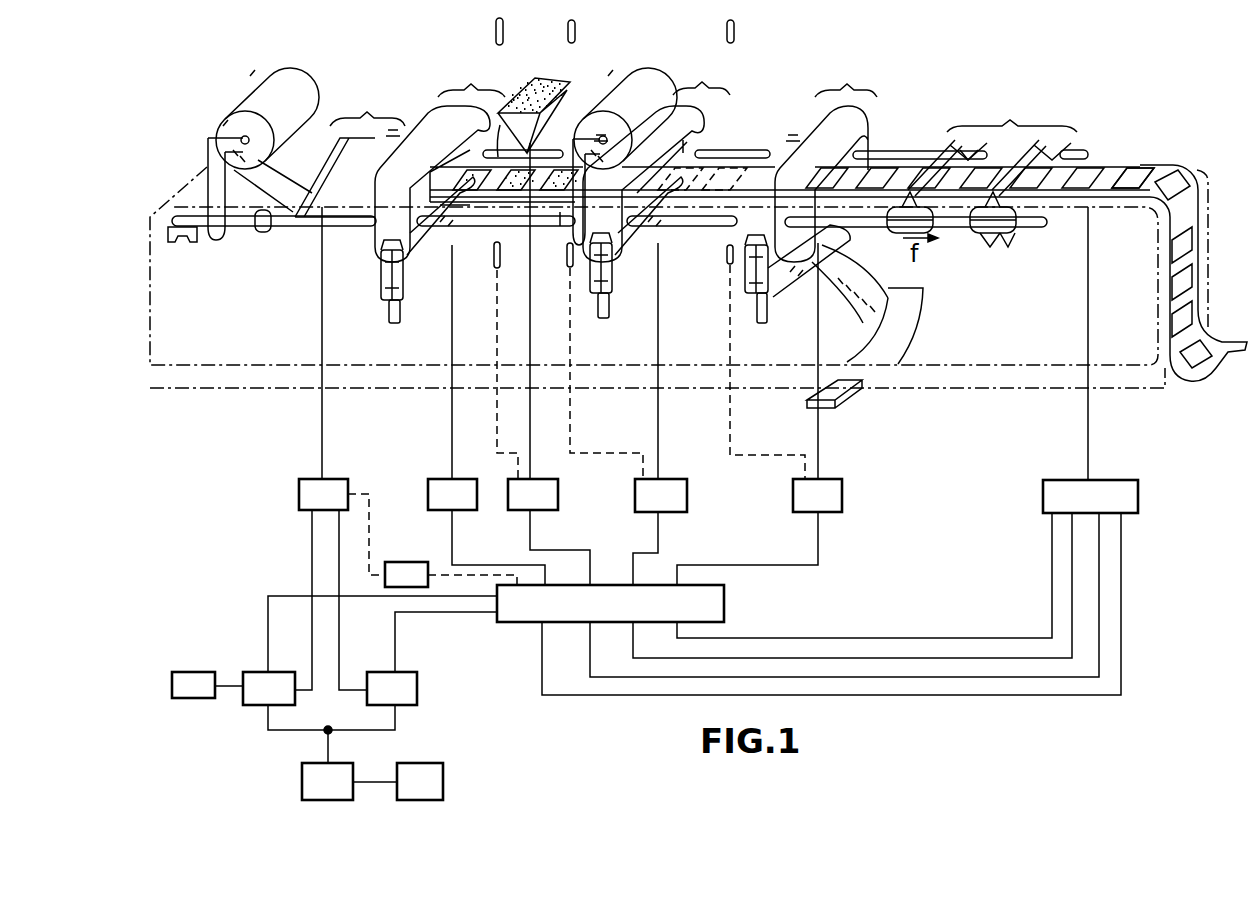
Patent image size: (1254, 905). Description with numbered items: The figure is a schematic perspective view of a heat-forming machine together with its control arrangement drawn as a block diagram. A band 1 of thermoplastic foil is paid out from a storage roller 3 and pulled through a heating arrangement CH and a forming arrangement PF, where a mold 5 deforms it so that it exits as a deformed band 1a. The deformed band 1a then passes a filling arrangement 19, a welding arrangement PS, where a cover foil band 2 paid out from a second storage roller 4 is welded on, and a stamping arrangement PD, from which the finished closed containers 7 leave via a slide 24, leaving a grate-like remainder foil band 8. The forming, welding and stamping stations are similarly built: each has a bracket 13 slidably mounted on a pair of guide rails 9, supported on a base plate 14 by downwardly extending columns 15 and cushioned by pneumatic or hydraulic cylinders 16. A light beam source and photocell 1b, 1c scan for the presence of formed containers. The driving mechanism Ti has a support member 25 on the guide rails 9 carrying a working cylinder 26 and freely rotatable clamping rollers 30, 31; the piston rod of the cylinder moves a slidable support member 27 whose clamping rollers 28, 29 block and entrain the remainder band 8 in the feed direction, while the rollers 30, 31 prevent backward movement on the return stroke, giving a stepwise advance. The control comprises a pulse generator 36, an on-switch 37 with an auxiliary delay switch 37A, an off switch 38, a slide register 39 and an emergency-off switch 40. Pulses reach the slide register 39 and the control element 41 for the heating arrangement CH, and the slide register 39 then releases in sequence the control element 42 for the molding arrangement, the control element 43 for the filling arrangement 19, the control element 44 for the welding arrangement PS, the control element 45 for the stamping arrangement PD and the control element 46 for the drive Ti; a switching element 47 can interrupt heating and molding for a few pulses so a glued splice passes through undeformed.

The foil band 1 is at (256, 188).
The deformed band 1a is at (498, 157).
The light beam source 1b is at (503, 22).
The photocell 1c is at (500, 256).
The cover foil band 2 is at (560, 218).
The storage roller 3 is at (243, 137).
The second storage roller 4 is at (603, 139).
The mold 5 is at (455, 214).
The finished closed container 7 is at (845, 395).
The grate-like remainder foil band 8 is at (1150, 166).
The guide rails 9 is at (745, 150).
The bracket 13 is at (440, 124).
The base plate 14 is at (430, 280).
The column 15 is at (398, 323).
The pneumatic or hydraulic cylinder 16 is at (381, 274).
The filling arrangement 19 is at (546, 90).
The slide 24 is at (920, 302).
The support member 25 is at (1066, 148).
The working cylinder 26 is at (1120, 176).
The support member 27 is at (975, 145).
The clamping roller 28 is at (955, 140).
The clamping roller 29 is at (940, 162).
The clamping roller 30 is at (1040, 148).
The clamping roller 31 is at (1035, 204).
The pulse generator 36 is at (327, 781).
The on-switch 37 is at (269, 688).
The auxiliary delay switch 37A is at (193, 685).
The off switch 38 is at (392, 688).
The slide register 39 is at (610, 603).
The emergency-off switch 40 is at (420, 781).
The control element for heating arrangement 41 is at (323, 494).
The control element for molding arrangement 42 is at (452, 494).
The control element for filling arrangement 43 is at (533, 494).
The control element for welding arrangement 44 is at (661, 495).
The control element for stamping arrangement 45 is at (817, 495).
The control element for advancing drive arrangement 46 is at (1090, 496).
The switching element 47 is at (406, 574).
The heating arrangement CH is at (367, 108).
The forming arrangement PF is at (471, 77).
The welding arrangement PS is at (701, 76).
The stamping arrangement PD is at (846, 77).
The driving mechanism Ti is at (1012, 109).